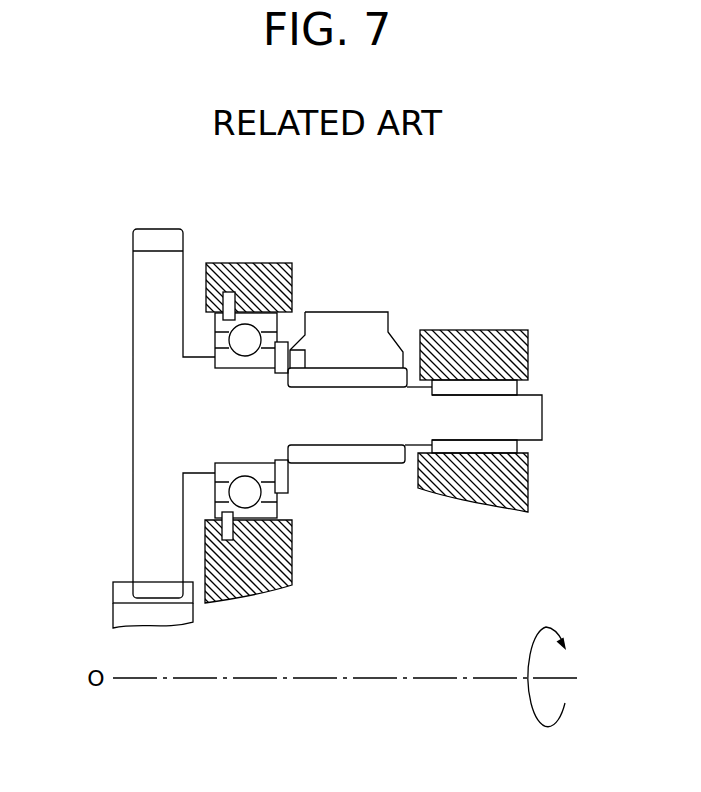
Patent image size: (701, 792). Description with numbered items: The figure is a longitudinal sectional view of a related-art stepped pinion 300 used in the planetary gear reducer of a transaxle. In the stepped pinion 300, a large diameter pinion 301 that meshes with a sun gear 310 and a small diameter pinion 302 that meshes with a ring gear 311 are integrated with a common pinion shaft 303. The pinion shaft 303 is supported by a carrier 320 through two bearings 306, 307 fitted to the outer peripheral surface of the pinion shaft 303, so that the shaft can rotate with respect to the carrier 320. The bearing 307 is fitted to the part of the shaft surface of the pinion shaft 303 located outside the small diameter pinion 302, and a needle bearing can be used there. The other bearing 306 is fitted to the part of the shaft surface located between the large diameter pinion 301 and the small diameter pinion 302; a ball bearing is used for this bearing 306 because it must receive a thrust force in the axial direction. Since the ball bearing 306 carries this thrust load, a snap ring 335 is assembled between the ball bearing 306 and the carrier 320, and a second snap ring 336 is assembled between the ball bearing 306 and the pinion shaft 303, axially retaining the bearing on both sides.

The stepped pinion 300 is at (97, 418).
The large diameter pinion 301 is at (140, 270).
The small diameter pinion 302 is at (370, 432).
The pinion shaft 303 is at (532, 420).
The ball bearing 306 is at (270, 328).
The needle bearing 307 is at (505, 388).
The sun gear 310 is at (123, 615).
The ring gear 311 is at (358, 323).
The carrier 320 is at (478, 347).
The snap ring 335 is at (228, 290).
The snap ring 336 is at (283, 482).